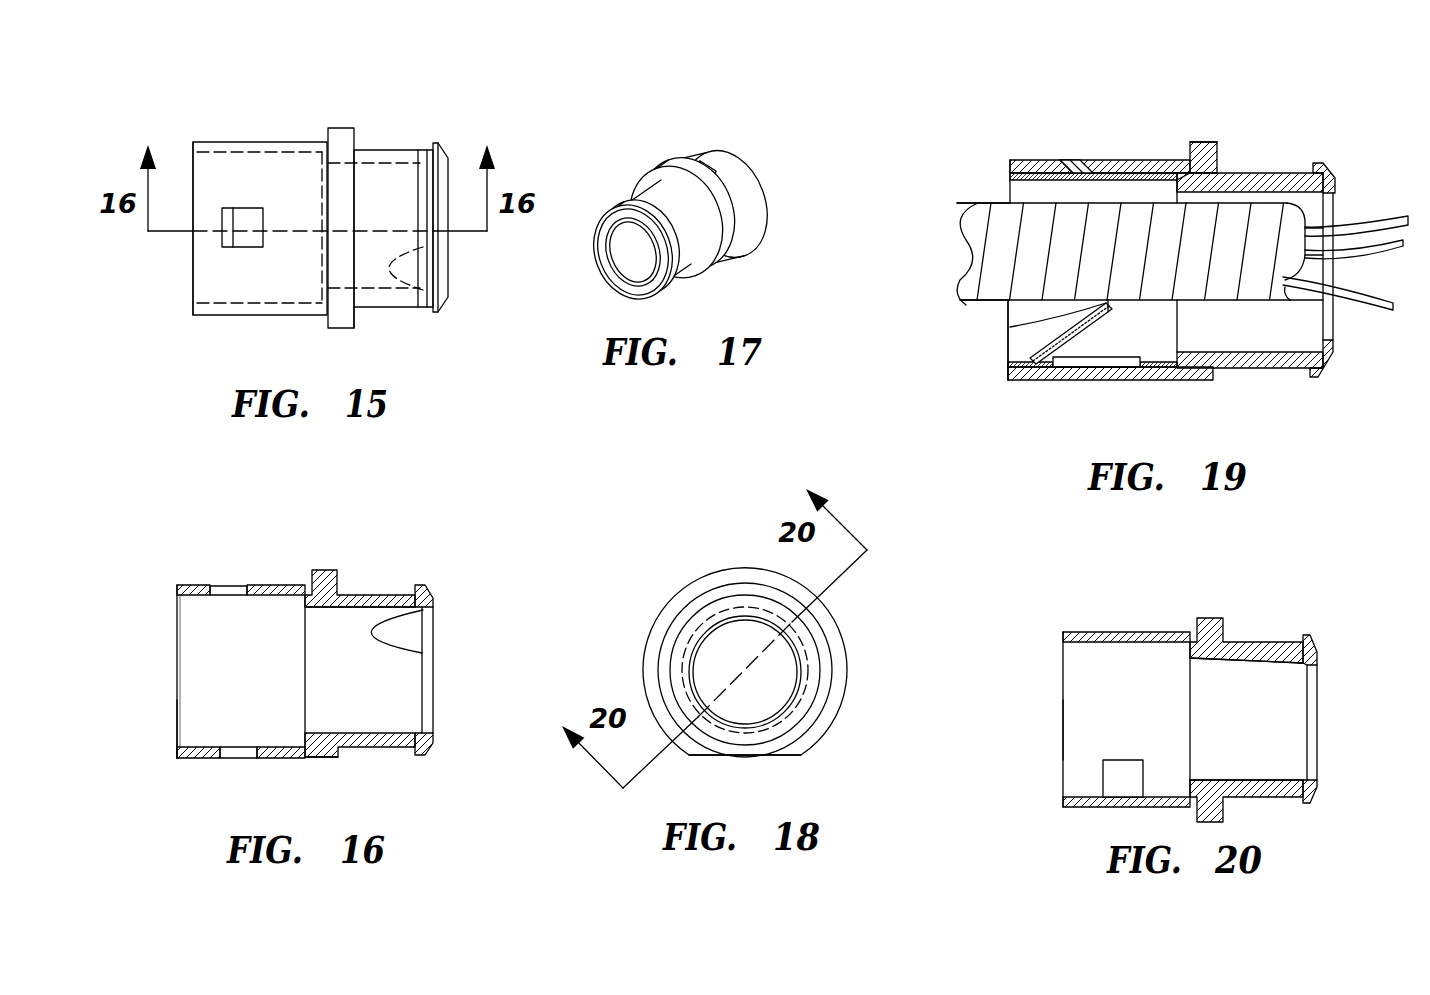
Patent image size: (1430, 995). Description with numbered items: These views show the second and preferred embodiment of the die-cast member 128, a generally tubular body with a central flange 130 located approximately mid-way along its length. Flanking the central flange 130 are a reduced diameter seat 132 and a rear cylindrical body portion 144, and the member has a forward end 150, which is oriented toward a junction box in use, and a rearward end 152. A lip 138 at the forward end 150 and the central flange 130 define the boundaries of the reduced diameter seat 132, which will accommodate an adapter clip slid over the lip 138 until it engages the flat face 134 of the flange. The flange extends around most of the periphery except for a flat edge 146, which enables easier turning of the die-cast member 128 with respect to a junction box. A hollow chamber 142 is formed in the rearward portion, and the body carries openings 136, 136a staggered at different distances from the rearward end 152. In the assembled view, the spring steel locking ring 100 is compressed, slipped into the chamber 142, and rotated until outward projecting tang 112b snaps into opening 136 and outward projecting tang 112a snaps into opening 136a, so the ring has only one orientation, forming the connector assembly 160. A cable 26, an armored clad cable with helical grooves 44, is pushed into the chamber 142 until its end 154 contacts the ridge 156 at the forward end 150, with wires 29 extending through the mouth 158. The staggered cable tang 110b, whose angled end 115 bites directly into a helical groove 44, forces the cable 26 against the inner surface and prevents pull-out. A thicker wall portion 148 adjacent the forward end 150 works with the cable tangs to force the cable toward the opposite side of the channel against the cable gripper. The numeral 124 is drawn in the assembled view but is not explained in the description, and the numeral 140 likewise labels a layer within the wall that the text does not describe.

In FIG. 19, the cable 26 is at (970, 267).
In FIG. 19, the wires 29 is at (1373, 217).
In FIG. 19, the helical grooves 44 is at (990, 205).
In FIG. 19, the spring steel locking ring 100 is at (1000, 366).
In FIG. 19, the staggered cable tang 110b is at (1093, 327).
In FIG. 19, the outward projecting tang 112a is at (1063, 380).
In FIG. 19, the outward projecting tang 112b is at (1065, 160).
In FIG. 19, the angled end 115 is at (1010, 327).
In FIG. 19, the interface 124 is at (1160, 178).
In FIG. 15, the die-cast member 128 is at (320, 205).
In FIG. 17, the die-cast member 128 is at (732, 197).
In FIG. 19, the die-cast member 128 is at (1136, 253).
In FIG. 16, the die-cast member 128 is at (311, 636).
In FIG. 18, the die-cast member 128 is at (733, 649).
In FIG. 20, the die-cast member 128 is at (1176, 689).
In FIG. 15, the central flange 130 is at (338, 330).
In FIG. 17, the central flange 130 is at (673, 170).
In FIG. 19, the central flange 130 is at (1207, 142).
In FIG. 16, the central flange 130 is at (328, 570).
In FIG. 18, the central flange 130 is at (838, 652).
In FIG. 20, the central flange 130 is at (1205, 618).
In FIG. 15, the reduced diameter seat 132 is at (383, 148).
In FIG. 17, the reduced diameter seat 132 is at (677, 277).
In FIG. 19, the reduced diameter seat 132 is at (1297, 172).
In FIG. 16, the reduced diameter seat 132 is at (353, 593).
In FIG. 20, the reduced diameter seat 132 is at (1270, 642).
In FIG. 15, the flat face 134 is at (357, 315).
In FIG. 19, the flat face 134 is at (1205, 168).
In FIG. 15, the opening 136 is at (247, 247).
In FIG. 17, the opening 136 is at (692, 162).
In FIG. 19, the opening 136 is at (1080, 163).
In FIG. 16, the opening 136 is at (228, 588).
In FIG. 20, the opening 136 is at (1113, 768).
In FIG. 19, the opening 136a is at (1080, 375).
In FIG. 16, the opening 136a is at (233, 753).
In FIG. 15, the lip 138 is at (433, 142).
In FIG. 19, the lip 138 is at (1322, 270).
In FIG. 16, the lip 138 is at (422, 588).
In FIG. 20, the lip 138 is at (1300, 802).
In FIG. 19, the liner 140 is at (1127, 177).
In FIG. 16, the liner 140 is at (303, 603).
In FIG. 19, the hollow chamber 142 is at (960, 305).
In FIG. 16, the hollow chamber 142 is at (177, 713).
In FIG. 20, the hollow chamber 142 is at (1080, 728).
In FIG. 15, the rear cylindrical body portion 144 is at (253, 140).
In FIG. 17, the rear cylindrical body portion 144 is at (757, 227).
In FIG. 19, the rear cylindrical body portion 144 is at (1033, 380).
In FIG. 16, the rear cylindrical body portion 144 is at (283, 585).
In FIG. 20, the rear cylindrical body portion 144 is at (1170, 630).
In FIG. 16, the flat edge 146 is at (330, 757).
In FIG. 18, the flat edge 146 is at (742, 757).
In FIG. 20, the thicker wall portion 148 is at (1298, 672).
In FIG. 15, the forward end 150 is at (448, 278).
In FIG. 19, the forward end 150 is at (1333, 348).
In FIG. 16, the forward end 150 is at (433, 603).
In FIG. 20, the forward end 150 is at (1317, 777).
In FIG. 15, the rearward end 152 is at (193, 265).
In FIG. 19, the rearward end 152 is at (1008, 345).
In FIG. 16, the rearward end 152 is at (195, 662).
In FIG. 19, the end of the cable 154 is at (1328, 310).
In FIG. 19, the ridge 156 is at (1322, 342).
In FIG. 19, the mouth 158 is at (1327, 215).
In FIG. 19, the connector assembly 160 is at (1142, 118).